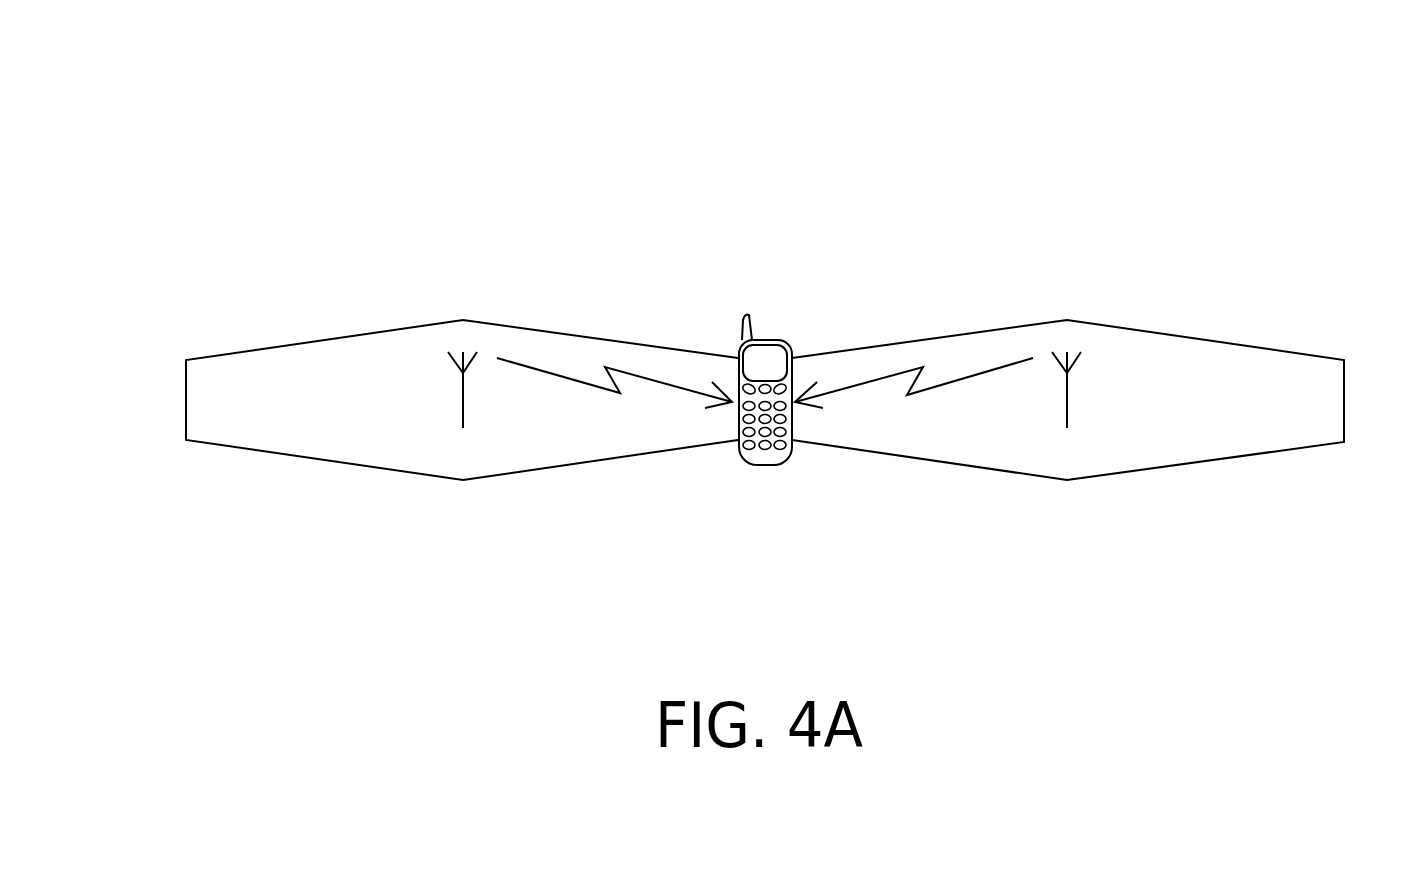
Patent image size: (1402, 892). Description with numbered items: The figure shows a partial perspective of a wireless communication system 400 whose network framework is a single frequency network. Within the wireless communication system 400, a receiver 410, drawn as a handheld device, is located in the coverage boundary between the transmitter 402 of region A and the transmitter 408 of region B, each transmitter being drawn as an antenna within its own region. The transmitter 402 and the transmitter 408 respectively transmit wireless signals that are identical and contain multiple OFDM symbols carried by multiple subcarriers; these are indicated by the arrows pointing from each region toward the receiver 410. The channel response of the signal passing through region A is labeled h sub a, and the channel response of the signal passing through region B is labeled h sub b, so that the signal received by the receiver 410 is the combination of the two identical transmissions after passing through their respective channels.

The wireless communication system 400 is at (157, 88).
The transmitter 402 is at (455, 388).
The transmitter 408 is at (1070, 388).
The receiver 410 is at (763, 337).